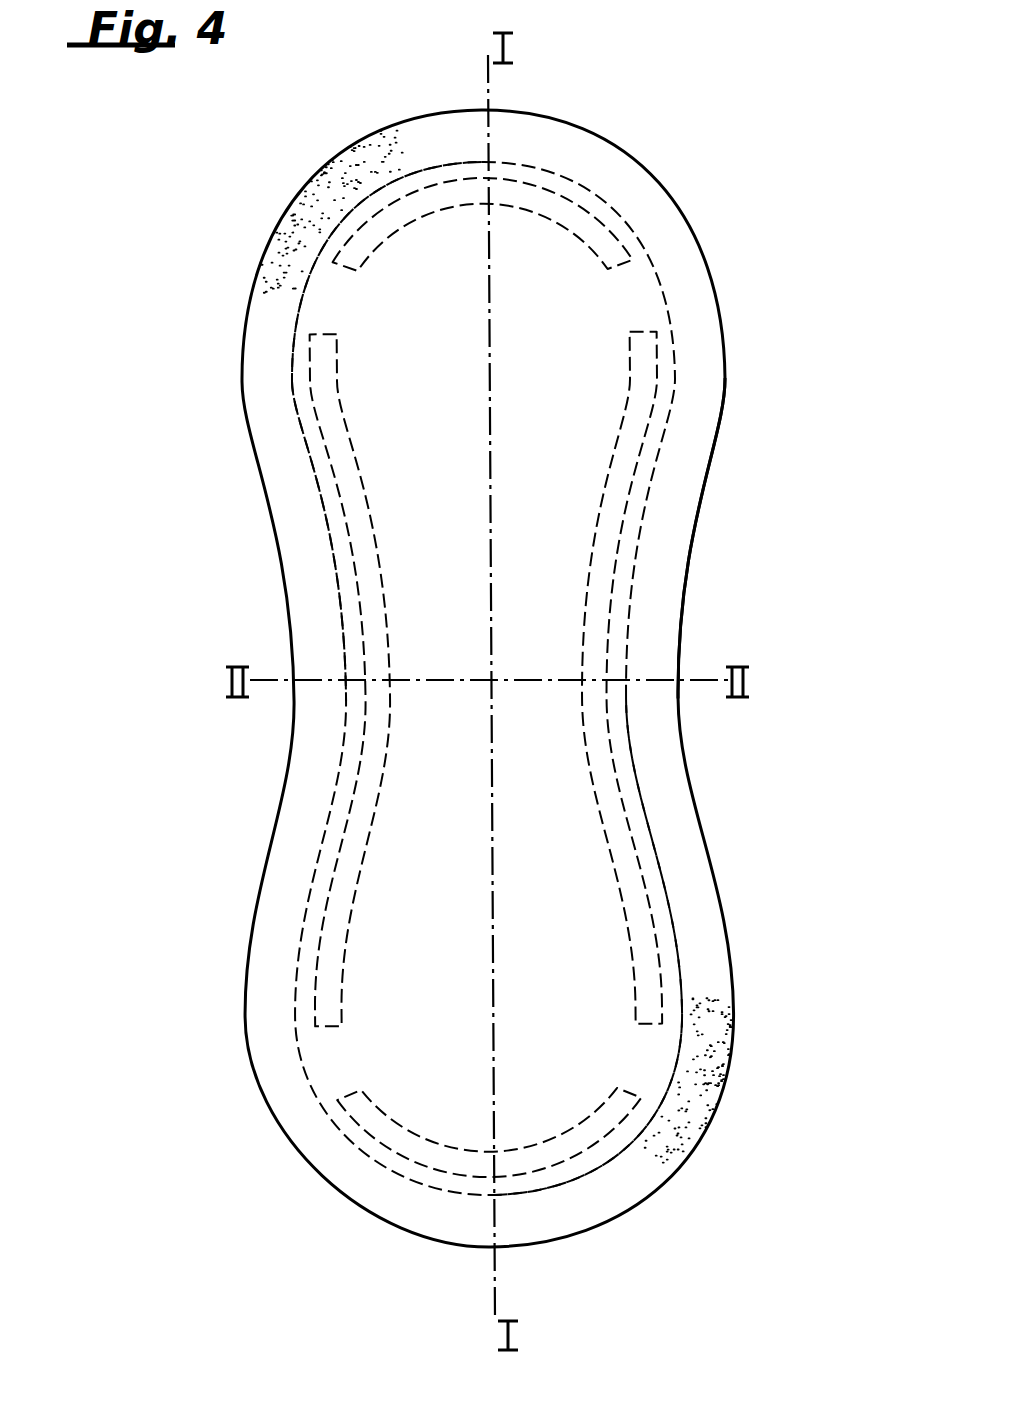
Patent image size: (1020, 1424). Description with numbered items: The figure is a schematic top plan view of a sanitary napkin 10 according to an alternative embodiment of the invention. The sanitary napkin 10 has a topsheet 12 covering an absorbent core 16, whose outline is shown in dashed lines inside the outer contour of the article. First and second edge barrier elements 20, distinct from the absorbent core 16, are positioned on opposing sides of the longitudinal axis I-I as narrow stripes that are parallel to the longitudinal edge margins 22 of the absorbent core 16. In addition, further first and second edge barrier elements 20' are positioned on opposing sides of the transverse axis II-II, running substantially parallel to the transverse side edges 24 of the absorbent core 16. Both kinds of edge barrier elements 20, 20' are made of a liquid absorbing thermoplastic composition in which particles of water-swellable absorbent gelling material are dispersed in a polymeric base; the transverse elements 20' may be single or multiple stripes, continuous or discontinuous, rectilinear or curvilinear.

The sanitary napkin 10 is at (722, 93).
The topsheet 12 is at (686, 428).
The absorbent core 16 is at (635, 300).
The edge barrier elements 20 is at (490, 679).
The edge barrier elements 20' is at (486, 682).
The longitudinal edge margins 22 is at (318, 512).
The transverse side edges 24 is at (433, 166).